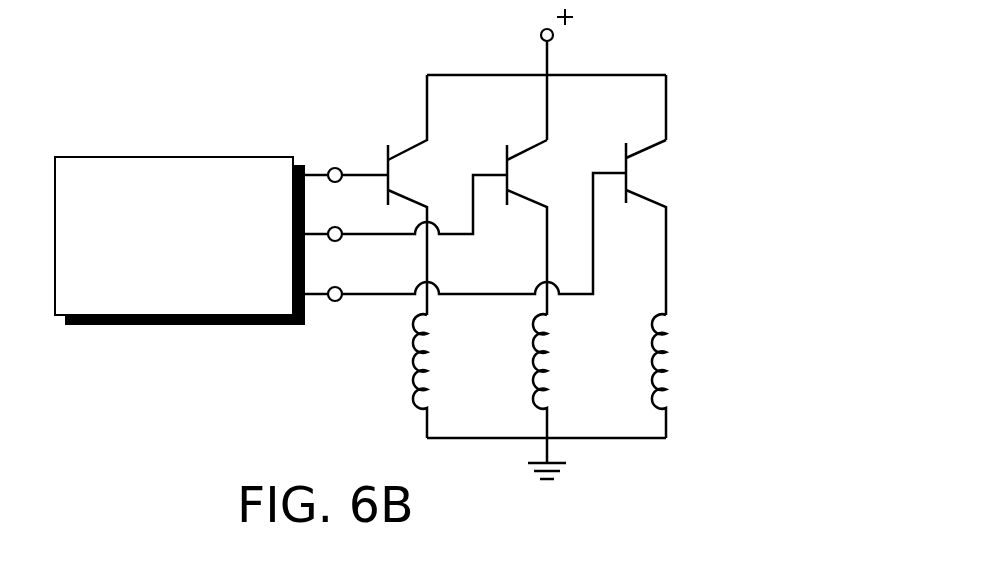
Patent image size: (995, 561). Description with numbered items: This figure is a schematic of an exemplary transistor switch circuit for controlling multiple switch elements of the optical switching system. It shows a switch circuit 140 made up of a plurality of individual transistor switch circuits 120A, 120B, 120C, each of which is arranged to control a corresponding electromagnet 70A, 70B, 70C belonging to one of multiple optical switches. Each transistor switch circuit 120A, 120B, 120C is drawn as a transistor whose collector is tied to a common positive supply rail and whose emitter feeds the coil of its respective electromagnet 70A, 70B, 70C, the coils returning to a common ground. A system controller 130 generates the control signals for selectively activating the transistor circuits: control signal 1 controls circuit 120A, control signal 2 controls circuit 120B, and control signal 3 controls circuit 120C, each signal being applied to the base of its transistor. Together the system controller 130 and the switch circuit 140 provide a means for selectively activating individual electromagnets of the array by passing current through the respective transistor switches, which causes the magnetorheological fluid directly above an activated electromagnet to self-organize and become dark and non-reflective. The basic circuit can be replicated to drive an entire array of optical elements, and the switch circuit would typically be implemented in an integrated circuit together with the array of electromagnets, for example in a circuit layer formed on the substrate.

The control signal 1 is at (346, 161).
The control signal 2 is at (406, 208).
The control signal 3 is at (465, 237).
The electromagnet 70A is at (415, 352).
The electromagnet 70B is at (537, 352).
The electromagnet 70C is at (657, 352).
The switch circuit 120A is at (374, 122).
The switch circuit 120B is at (480, 142).
The switch circuit 120C is at (599, 133).
The system controller 130 is at (148, 305).
The switch circuit 140 is at (587, 244).